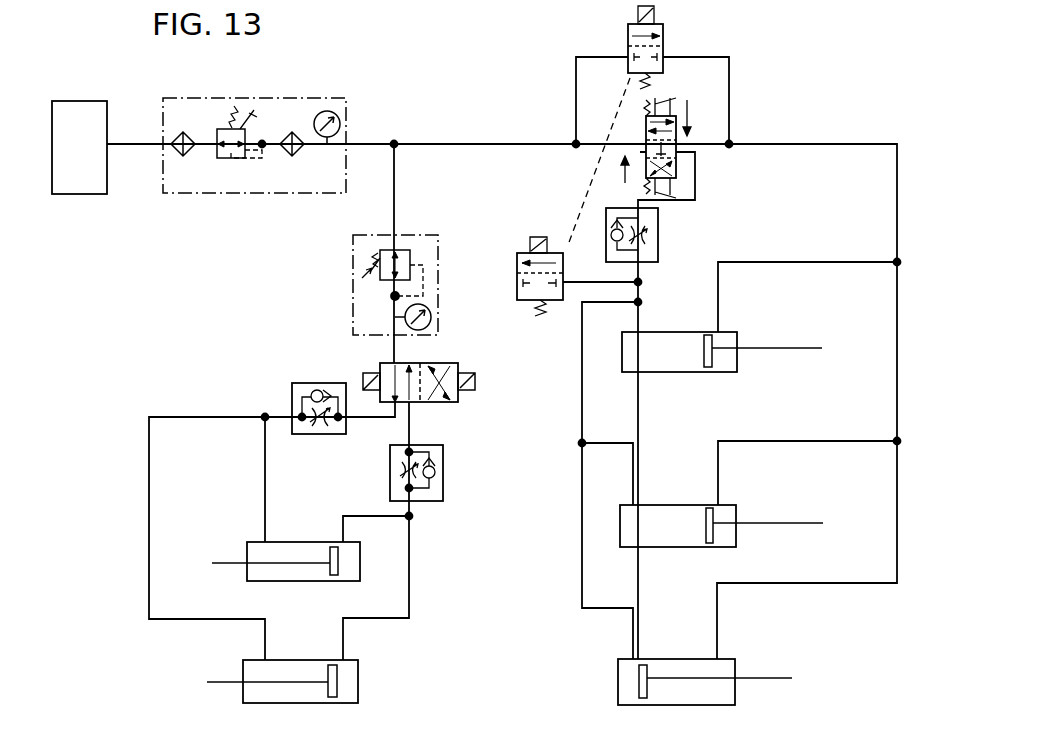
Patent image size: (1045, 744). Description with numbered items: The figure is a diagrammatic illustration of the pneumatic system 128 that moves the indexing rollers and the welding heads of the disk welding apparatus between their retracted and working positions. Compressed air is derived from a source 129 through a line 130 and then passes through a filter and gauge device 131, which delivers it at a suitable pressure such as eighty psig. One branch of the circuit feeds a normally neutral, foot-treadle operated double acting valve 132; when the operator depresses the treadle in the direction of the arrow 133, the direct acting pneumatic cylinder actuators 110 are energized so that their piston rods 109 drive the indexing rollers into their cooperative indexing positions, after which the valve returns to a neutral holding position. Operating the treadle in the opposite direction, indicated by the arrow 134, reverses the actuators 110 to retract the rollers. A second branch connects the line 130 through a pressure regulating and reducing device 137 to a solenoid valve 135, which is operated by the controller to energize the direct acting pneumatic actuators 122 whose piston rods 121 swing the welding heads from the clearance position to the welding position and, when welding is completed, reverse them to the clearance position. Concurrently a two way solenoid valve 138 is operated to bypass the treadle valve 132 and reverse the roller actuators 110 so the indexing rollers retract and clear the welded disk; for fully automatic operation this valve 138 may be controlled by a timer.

The piston rod 109 is at (765, 350).
The direct acting pneumatic cylinder actuator 110 is at (728, 330).
The piston rod 121 is at (226, 563).
The direct acting pneumatic actuator 122 is at (283, 583).
The pneumatic system 128 is at (388, 127).
The source 129 is at (68, 108).
The line 130 is at (140, 147).
The filter and gauge device 131 is at (283, 98).
The double acting valve 132 is at (646, 135).
The arrow 133 is at (625, 180).
The arrow 134 is at (687, 115).
The solenoid valve 135 is at (425, 363).
The pressure regulating and reducing device 137 is at (428, 245).
The two way solenoid valve 138 is at (628, 40).